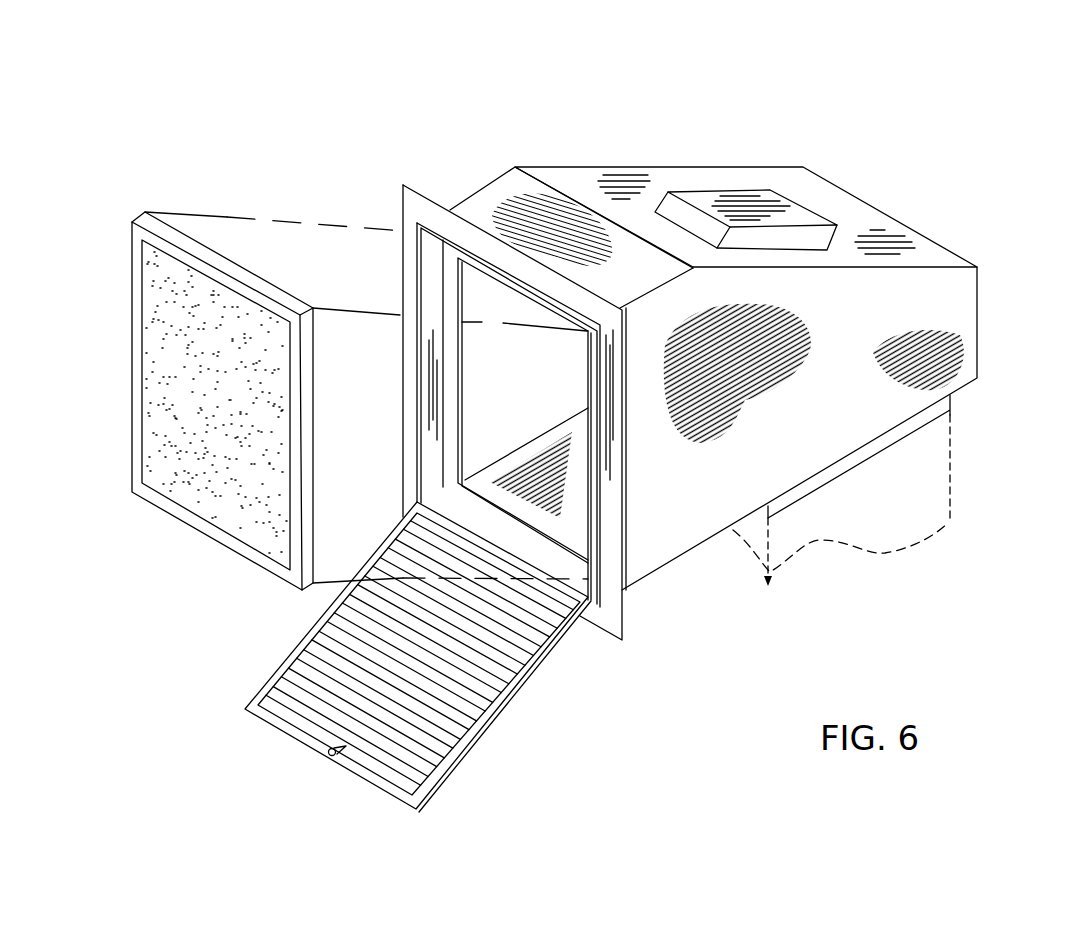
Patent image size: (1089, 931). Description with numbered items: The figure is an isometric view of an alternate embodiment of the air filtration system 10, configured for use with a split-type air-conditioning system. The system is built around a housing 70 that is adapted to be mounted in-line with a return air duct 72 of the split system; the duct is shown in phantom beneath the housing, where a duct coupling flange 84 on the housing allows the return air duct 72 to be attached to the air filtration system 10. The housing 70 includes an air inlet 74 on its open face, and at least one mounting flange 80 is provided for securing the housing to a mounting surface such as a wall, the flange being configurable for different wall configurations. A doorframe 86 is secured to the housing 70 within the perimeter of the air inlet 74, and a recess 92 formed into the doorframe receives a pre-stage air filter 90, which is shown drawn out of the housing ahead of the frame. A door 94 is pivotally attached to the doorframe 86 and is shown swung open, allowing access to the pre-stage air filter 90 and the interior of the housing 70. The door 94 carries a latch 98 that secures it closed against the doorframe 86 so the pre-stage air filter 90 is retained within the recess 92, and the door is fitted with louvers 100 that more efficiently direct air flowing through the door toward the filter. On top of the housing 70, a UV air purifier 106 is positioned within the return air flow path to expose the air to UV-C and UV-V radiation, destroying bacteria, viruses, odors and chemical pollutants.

The air filtration system 10 is at (933, 180).
The housing 70 is at (607, 165).
The return air duct 72 is at (897, 510).
The air inlet 74 is at (478, 305).
The mounting flange 80 is at (485, 240).
The duct coupling flange 84 is at (930, 418).
The doorframe 86 is at (600, 477).
The pre-stage air filter 90 is at (202, 430).
The recess 92 is at (438, 458).
The door 94 is at (460, 753).
The latch 98 is at (330, 757).
The louvers 100 is at (348, 623).
The UV air purifier 106 is at (747, 207).